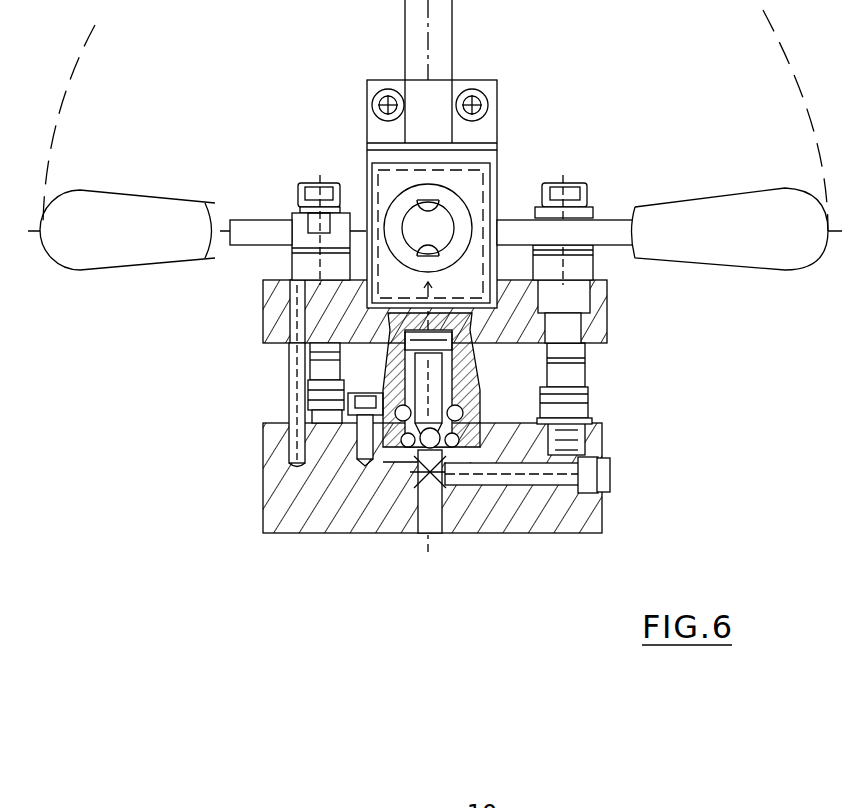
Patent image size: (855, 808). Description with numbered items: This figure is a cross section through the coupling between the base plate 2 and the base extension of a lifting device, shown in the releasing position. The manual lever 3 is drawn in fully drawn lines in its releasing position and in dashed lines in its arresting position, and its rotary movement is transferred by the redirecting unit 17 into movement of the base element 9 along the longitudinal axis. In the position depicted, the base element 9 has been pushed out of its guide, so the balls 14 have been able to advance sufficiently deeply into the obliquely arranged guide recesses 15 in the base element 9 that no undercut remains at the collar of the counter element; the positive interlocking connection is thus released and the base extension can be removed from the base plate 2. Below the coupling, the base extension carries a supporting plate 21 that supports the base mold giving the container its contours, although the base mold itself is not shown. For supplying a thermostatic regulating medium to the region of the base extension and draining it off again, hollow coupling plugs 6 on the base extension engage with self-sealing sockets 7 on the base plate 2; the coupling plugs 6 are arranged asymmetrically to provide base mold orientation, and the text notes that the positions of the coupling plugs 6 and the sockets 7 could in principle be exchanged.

The base plate 2 is at (263, 329).
The manual lever 3 is at (145, 205).
The hollow coupling plugs 6 is at (577, 352).
The self-sealing sockets 7 is at (578, 297).
The base element 9 is at (432, 448).
The balls 14 is at (395, 447).
The guide recesses 15 is at (447, 448).
The redirecting unit 17 is at (442, 220).
The supporting plate 21 is at (263, 493).